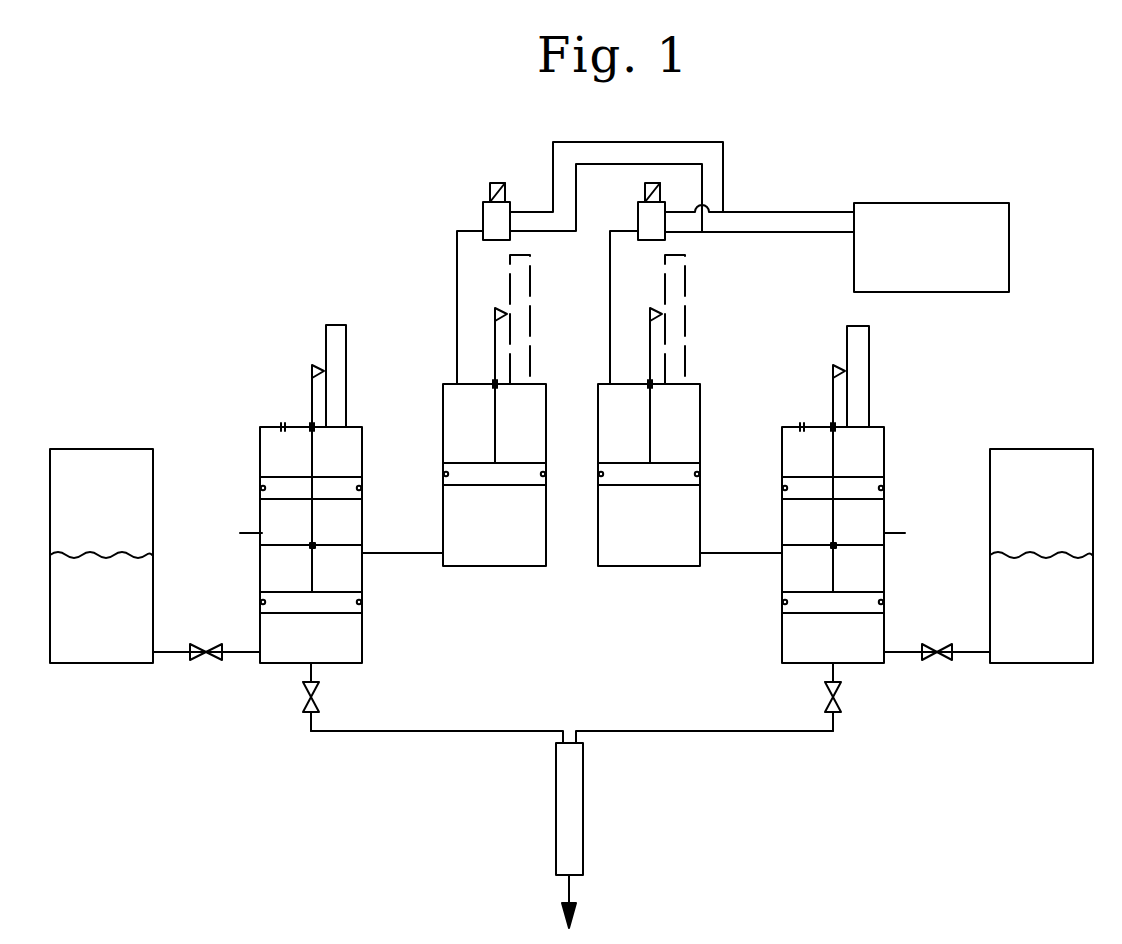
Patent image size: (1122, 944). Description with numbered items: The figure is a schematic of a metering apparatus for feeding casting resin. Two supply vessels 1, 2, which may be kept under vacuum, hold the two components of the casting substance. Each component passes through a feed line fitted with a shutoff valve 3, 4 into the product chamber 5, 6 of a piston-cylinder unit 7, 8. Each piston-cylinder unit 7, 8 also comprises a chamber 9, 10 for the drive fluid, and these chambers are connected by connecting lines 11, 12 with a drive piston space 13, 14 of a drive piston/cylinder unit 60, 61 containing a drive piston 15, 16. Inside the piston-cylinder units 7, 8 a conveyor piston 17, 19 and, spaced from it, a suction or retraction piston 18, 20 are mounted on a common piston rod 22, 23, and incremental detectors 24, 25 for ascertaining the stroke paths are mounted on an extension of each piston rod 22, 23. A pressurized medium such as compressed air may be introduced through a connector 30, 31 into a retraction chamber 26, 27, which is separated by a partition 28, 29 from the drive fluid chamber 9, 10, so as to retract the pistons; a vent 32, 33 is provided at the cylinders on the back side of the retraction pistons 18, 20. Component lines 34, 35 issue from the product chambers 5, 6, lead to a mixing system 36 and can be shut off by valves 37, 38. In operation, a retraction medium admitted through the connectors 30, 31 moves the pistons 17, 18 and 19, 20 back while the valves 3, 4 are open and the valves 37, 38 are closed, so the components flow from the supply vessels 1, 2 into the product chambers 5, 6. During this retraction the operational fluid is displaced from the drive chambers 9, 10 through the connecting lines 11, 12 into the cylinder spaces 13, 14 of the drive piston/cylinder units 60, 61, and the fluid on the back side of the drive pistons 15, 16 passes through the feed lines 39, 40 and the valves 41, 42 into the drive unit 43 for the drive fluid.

The supply vessel 1 is at (108, 513).
The supply vessel 2 is at (1048, 513).
The shutoff valve 3 is at (206, 661).
The shutoff valve 4 is at (937, 661).
The product chamber 5 is at (310, 636).
The product chamber 6 is at (832, 636).
The piston-cylinder unit 7 is at (258, 425).
The piston-cylinder unit 8 is at (886, 425).
The drive fluid chamber 9 is at (337, 567).
The drive fluid chamber 10 is at (805, 567).
The connecting line 11 is at (400, 557).
The connecting line 12 is at (740, 557).
The drive piston space 13 is at (494, 437).
The drive piston space 14 is at (649, 437).
The drive piston 15 is at (468, 475).
The drive piston 16 is at (678, 475).
The conveyor piston 17 is at (291, 603).
The retraction piston 18 is at (286, 491).
The conveyor piston 19 is at (853, 603).
The retraction piston 20 is at (860, 491).
The piston rod 22 is at (310, 371).
The piston rod 23 is at (831, 371).
The incremental detector 24 is at (337, 335).
The incremental detector 25 is at (852, 335).
The retraction chamber 26 is at (311, 526).
The retraction chamber 27 is at (833, 526).
The partition 28 is at (286, 545).
The partition 29 is at (860, 545).
The connector 30 is at (253, 533).
The connector 31 is at (893, 533).
The vent 32 is at (283, 424).
The vent 33 is at (802, 424).
The component line 34 is at (488, 731).
The component line 35 is at (653, 731).
The mixing system 36 is at (577, 805).
The valve 37 is at (318, 694).
The valve 38 is at (826, 694).
The feed line 39 is at (457, 290).
The feed line 40 is at (610, 290).
The valve 41 is at (483, 212).
The valve 42 is at (638, 212).
The drive unit 43 is at (931, 247).
The drive piston/cylinder unit 60 is at (441, 384).
The drive piston/cylinder unit 61 is at (704, 420).